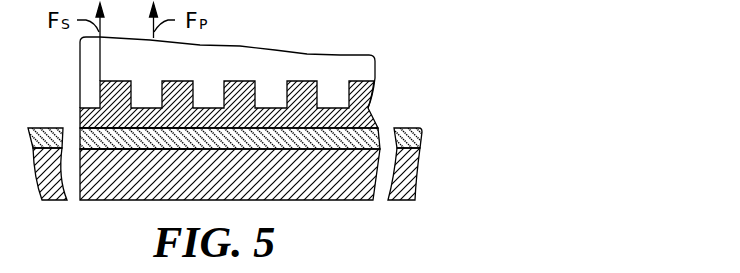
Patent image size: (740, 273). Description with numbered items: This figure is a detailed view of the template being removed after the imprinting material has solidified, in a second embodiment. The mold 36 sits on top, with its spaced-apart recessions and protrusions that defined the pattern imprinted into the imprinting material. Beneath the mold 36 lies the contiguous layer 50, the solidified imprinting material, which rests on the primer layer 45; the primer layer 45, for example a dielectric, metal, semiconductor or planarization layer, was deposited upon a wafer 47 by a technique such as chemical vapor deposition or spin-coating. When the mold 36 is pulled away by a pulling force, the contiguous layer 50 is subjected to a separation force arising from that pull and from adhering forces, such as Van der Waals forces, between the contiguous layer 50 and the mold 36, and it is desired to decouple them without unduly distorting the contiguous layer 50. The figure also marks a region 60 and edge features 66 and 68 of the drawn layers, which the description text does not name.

The mold 36 is at (332, 54).
The patterned layer 60 is at (376, 77).
The contiguous layer 50 is at (371, 107).
The primer layer 45 is at (378, 136).
The wafer 47 is at (415, 182).
The interface edge 66 is at (110, 128).
The interface 68 is at (157, 149).